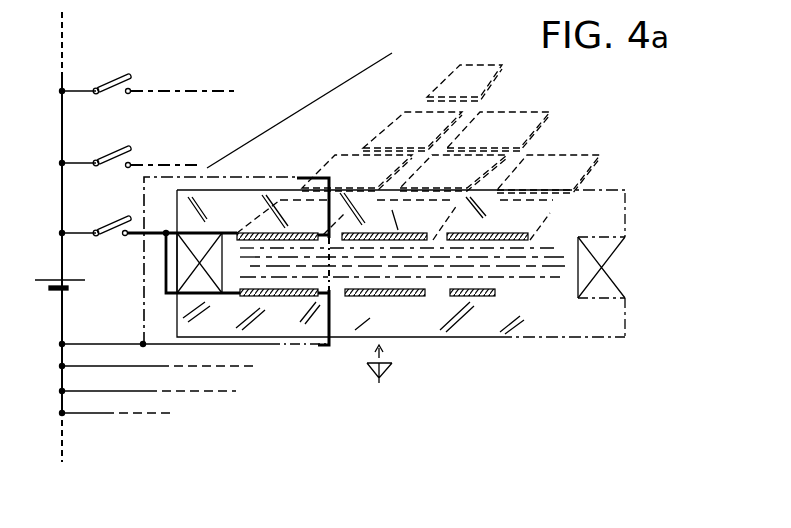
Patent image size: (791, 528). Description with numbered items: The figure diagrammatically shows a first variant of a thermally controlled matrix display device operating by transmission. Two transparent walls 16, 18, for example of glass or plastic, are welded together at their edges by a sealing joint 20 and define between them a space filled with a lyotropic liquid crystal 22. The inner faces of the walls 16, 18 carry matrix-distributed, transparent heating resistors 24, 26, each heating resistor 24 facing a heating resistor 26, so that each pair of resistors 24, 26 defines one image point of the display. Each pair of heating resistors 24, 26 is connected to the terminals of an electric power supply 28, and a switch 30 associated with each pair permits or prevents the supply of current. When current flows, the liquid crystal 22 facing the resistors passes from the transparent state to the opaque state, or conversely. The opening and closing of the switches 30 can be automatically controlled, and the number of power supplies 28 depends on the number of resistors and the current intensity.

The transparent wall 16 is at (624, 190).
The transparent wall 18 is at (624, 308).
The sealing joint 20 is at (616, 268).
The lyotropic liquid crystal 22 is at (550, 273).
The heating resistor 24 is at (430, 97).
The heating resistor 26 is at (407, 298).
The electric power supply 28 is at (50, 279).
The switch 30 is at (107, 96).